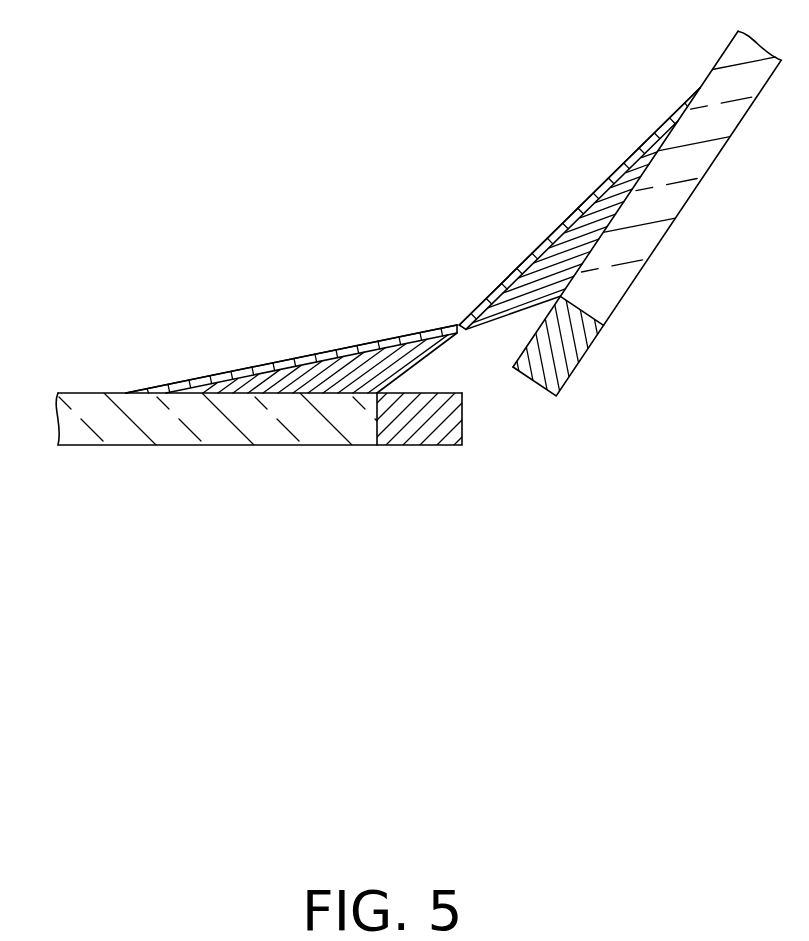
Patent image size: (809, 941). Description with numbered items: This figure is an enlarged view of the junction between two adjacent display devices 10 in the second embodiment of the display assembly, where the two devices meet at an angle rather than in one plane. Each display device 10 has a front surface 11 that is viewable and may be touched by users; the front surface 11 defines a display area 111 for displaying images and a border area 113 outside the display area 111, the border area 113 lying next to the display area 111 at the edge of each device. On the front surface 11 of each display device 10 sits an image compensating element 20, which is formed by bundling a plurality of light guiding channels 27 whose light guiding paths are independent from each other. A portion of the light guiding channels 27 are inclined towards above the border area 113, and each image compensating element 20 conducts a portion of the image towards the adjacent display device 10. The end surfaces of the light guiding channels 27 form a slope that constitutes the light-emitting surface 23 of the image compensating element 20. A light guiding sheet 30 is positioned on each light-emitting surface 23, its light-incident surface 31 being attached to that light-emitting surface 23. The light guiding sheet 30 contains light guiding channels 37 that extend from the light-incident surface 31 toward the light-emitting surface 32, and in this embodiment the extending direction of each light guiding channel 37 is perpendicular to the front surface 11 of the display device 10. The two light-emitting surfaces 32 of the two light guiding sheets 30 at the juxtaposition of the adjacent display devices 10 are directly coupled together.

The display device 10 is at (190, 425).
The front surface 11 is at (381, 209).
The display area 111 is at (86, 386).
The border area 113 is at (424, 423).
The image compensating element 20 is at (430, 253).
The light guiding channel 27 is at (318, 380).
The light-emitting surface 23 is at (413, 221).
The light-incident surface 31 is at (372, 338).
The light guiding sheet 30 is at (417, 231).
The light guiding channel 37 is at (260, 370).
The light-emitting surface 32 is at (203, 377).